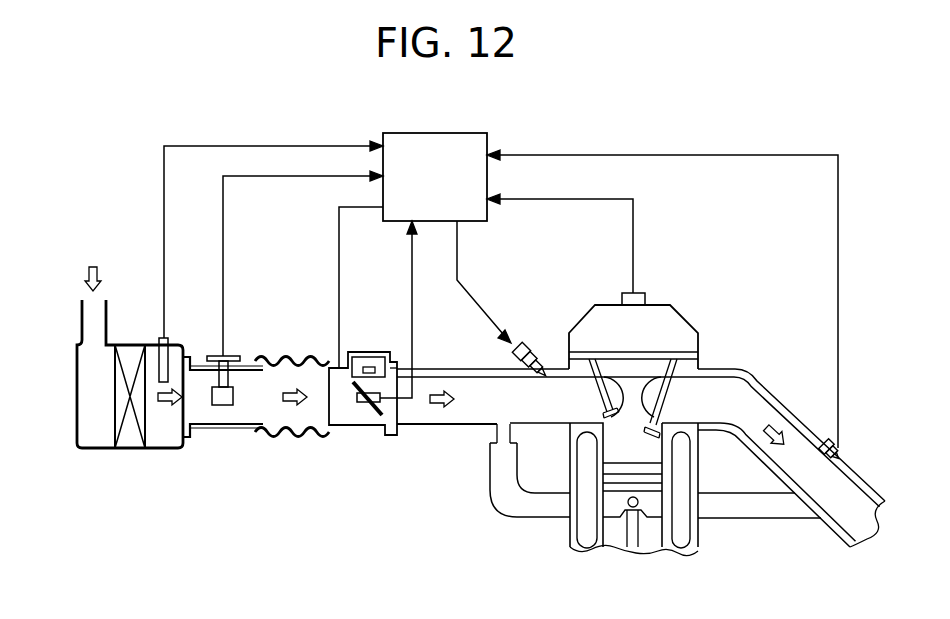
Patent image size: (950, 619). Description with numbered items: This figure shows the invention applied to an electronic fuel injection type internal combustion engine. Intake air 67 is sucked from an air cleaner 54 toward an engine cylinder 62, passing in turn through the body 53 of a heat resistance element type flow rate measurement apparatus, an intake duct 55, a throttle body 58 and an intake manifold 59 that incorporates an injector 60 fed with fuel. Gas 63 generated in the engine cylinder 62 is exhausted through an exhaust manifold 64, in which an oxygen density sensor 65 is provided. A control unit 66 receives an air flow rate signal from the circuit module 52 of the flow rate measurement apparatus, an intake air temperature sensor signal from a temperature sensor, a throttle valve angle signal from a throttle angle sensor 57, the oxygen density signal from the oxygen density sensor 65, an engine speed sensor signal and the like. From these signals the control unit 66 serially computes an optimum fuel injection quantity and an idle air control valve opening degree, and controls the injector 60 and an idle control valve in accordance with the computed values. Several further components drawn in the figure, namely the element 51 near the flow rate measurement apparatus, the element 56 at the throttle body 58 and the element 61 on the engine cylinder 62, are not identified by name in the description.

The airflow meter 51 is at (170, 338).
The circuit module 52 is at (232, 352).
The body of heat resistance element type flow rate measurement apparatus 53 is at (215, 427).
The air cleaner 54 is at (95, 448).
The intake duct 55 is at (290, 435).
The throttle body 56 is at (365, 350).
The throttle angle sensor 57 is at (365, 415).
The throttle body 58 is at (372, 425).
The intake manifold 59 is at (448, 428).
The injector 60 is at (530, 346).
The spark plug 61 is at (649, 294).
The engine cylinder 62 is at (617, 537).
The gas 63 is at (770, 408).
The exhaust manifold 64 is at (715, 368).
The oxygen density sensor 65 is at (843, 448).
The control unit 66 is at (440, 132).
The intake air 67 is at (86, 267).